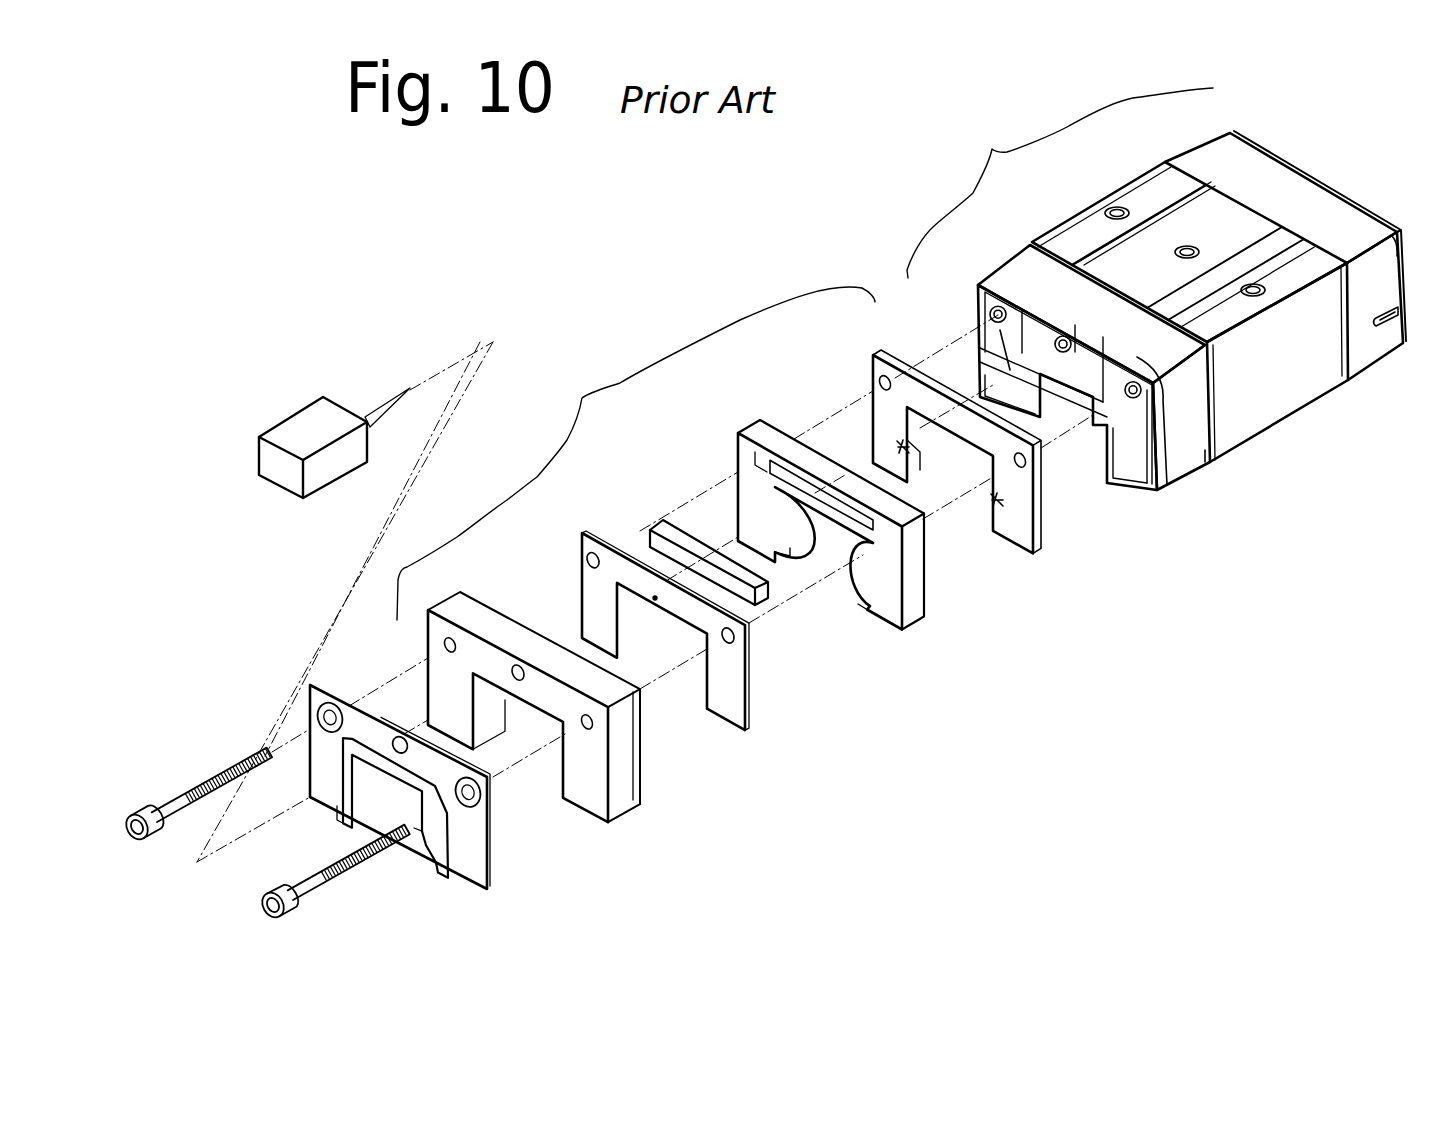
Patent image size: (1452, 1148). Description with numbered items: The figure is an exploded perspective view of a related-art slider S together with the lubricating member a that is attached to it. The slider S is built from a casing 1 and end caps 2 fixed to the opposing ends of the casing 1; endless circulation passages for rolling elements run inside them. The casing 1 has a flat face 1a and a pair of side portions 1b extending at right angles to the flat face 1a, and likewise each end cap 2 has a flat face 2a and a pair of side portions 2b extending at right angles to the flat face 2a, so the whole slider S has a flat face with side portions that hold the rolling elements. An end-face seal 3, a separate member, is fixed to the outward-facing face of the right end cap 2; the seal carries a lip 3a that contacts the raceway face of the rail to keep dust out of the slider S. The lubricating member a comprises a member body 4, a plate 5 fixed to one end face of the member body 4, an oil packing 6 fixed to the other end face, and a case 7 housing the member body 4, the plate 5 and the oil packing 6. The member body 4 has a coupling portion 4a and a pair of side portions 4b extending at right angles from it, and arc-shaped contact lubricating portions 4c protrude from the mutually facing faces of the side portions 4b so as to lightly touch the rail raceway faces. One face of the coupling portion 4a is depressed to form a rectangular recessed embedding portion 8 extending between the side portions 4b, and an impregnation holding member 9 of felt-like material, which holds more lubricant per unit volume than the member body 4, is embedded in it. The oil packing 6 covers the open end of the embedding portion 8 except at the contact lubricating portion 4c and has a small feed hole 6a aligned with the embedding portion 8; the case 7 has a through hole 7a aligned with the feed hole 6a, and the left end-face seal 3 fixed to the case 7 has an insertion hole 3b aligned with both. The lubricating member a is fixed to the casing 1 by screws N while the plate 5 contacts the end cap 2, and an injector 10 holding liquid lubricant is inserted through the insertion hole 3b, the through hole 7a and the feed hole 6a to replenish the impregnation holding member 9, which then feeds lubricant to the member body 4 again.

The casing 1 is at (1172, 305).
The flat face 1a is at (1292, 190).
The side portions 1b is at (1033, 244).
The end caps 2 is at (1172, 316).
The flat face 2a is at (1371, 227).
The side portions 2b is at (980, 375).
The end-face seal 3 is at (333, 683).
The lip 3a is at (421, 816).
The insertion hole 3b is at (400, 737).
The member body 4 is at (827, 511).
The coupling portion 4a is at (832, 478).
The side portions 4b is at (748, 505).
The contact lubricating portions 4c is at (848, 577).
The plate 5 is at (871, 352).
The oil packing 6 is at (585, 532).
The feed hole 6a is at (655, 600).
The case 7 is at (462, 592).
The through hole 7a is at (521, 683).
The embedding portion 8 is at (790, 462).
The impregnation holding member 9 is at (660, 522).
The injector 10 is at (302, 398).
The screws N is at (146, 812).
The slider S is at (1060, 183).
The lubricating member a is at (636, 453).